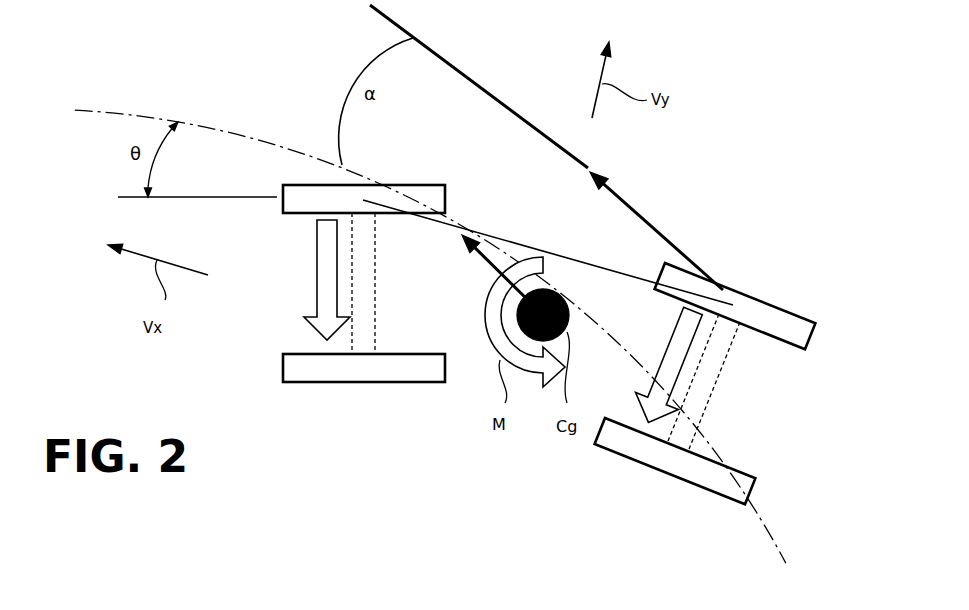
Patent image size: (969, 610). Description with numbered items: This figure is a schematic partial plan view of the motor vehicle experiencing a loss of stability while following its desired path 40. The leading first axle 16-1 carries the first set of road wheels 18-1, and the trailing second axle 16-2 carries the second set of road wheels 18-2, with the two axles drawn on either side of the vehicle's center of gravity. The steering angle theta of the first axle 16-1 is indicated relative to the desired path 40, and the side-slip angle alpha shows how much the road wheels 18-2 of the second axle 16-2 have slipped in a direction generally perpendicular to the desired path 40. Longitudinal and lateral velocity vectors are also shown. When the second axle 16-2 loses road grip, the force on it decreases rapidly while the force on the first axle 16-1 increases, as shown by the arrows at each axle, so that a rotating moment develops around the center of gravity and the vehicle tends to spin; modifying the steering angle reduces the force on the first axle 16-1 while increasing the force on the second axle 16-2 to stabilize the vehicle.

The desired path 40 is at (238, 135).
The first set of road wheels 18-1 is at (297, 214).
The first axle 16-1 is at (375, 340).
The second set of road wheels 18-2 is at (798, 312).
The second axle 16-2 is at (715, 392).